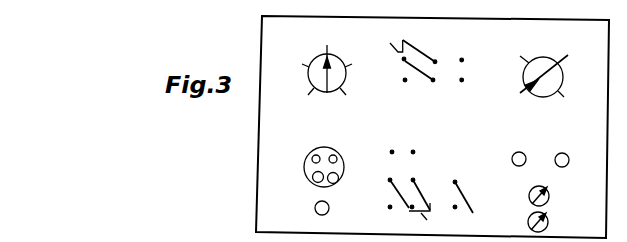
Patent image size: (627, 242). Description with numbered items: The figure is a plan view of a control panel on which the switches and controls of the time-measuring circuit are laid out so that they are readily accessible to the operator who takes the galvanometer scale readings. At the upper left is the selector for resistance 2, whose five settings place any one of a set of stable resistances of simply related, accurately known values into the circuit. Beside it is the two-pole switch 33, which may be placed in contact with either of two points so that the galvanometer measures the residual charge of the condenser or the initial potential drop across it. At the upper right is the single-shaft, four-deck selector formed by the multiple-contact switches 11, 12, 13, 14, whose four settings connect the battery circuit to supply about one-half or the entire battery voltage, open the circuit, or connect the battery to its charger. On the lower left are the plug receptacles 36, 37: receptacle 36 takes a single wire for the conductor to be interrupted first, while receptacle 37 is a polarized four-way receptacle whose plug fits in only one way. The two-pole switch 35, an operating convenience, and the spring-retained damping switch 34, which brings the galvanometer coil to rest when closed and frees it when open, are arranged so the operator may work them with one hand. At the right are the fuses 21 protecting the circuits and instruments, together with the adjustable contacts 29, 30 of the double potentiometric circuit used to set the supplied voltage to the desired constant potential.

The resistance 2 is at (327, 77).
The two-pole switch 33 is at (435, 57).
The multiple-contact switch 11 is at (543, 88).
The multiple-contact switch 12 is at (543, 88).
The multiple-contact switch 13 is at (543, 88).
The multiple-contact switch 14 is at (543, 88).
The plug receptacle 37 is at (310, 167).
The plug receptacle 36 is at (308, 209).
The two-pole switch 35 is at (395, 180).
The damping switch 34 is at (469, 194).
The fuses 21 is at (540, 159).
The adjustable contact 29 is at (552, 197).
The adjustable contact 30 is at (552, 222).